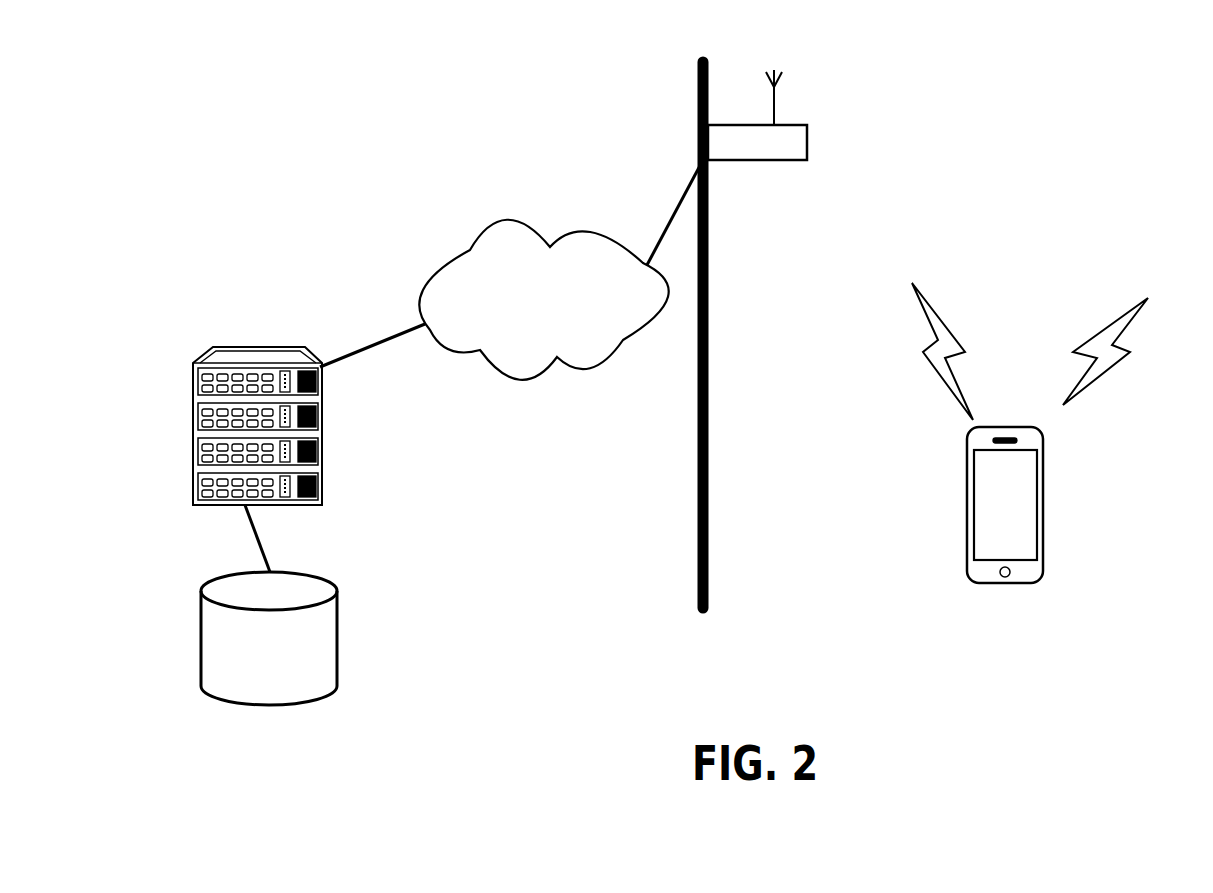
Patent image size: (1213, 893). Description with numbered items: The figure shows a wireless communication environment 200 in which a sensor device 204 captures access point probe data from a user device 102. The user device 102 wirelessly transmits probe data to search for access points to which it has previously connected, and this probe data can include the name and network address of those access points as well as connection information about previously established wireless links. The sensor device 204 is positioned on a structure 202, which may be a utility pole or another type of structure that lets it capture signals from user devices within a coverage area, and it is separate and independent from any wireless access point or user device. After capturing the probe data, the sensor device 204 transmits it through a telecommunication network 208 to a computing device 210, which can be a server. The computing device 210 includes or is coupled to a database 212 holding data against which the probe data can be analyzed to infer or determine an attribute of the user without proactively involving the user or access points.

The user device 102 is at (1043, 512).
The wireless communication environment 200 is at (1075, 75).
The structure 202 is at (708, 510).
The sensor device 204 is at (800, 125).
The telecommunication network 208 is at (587, 235).
The computing device 210 is at (322, 432).
The database 212 is at (337, 632).